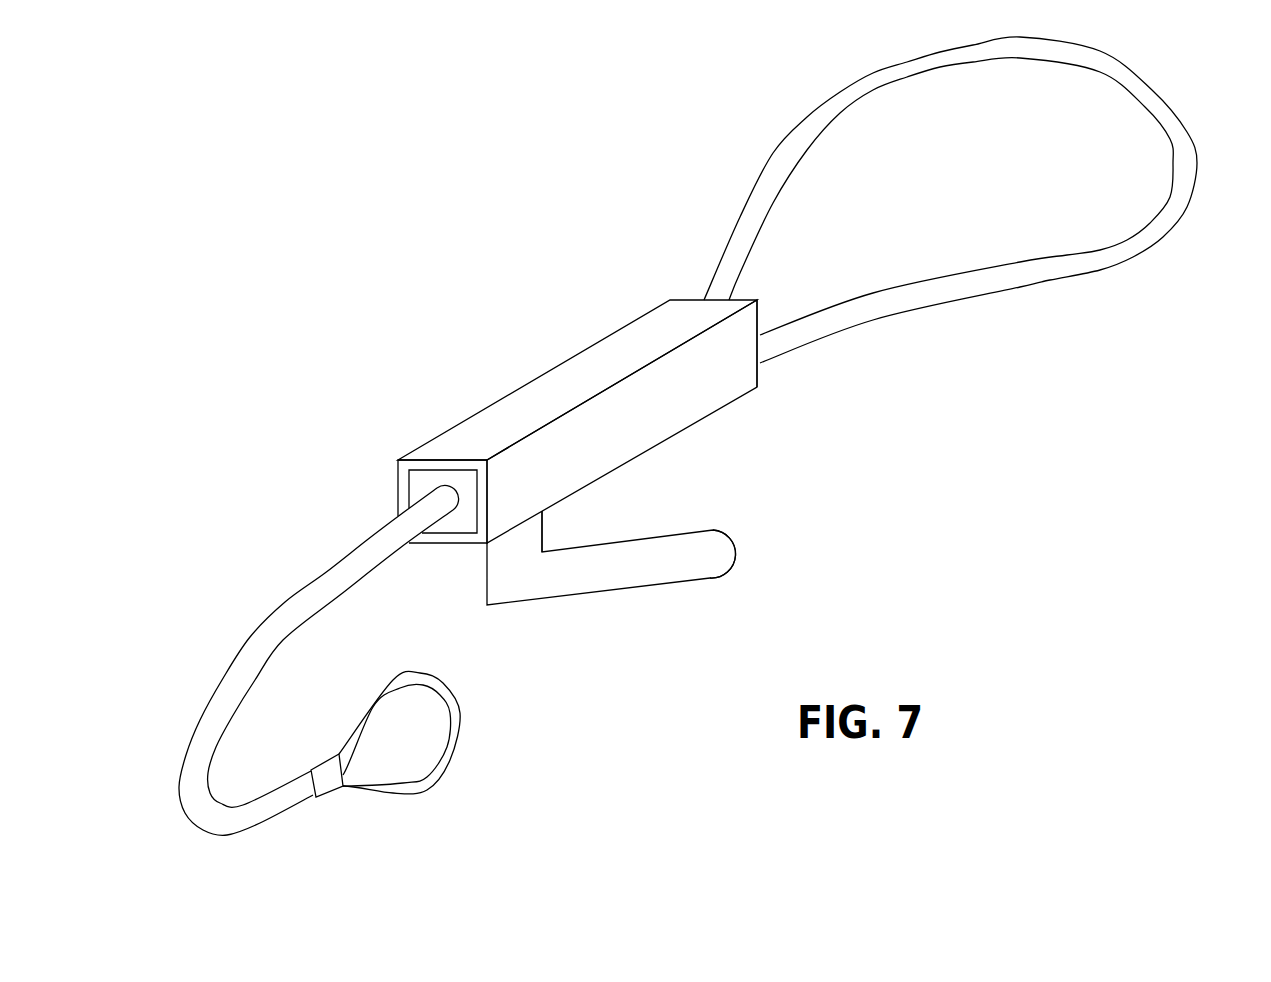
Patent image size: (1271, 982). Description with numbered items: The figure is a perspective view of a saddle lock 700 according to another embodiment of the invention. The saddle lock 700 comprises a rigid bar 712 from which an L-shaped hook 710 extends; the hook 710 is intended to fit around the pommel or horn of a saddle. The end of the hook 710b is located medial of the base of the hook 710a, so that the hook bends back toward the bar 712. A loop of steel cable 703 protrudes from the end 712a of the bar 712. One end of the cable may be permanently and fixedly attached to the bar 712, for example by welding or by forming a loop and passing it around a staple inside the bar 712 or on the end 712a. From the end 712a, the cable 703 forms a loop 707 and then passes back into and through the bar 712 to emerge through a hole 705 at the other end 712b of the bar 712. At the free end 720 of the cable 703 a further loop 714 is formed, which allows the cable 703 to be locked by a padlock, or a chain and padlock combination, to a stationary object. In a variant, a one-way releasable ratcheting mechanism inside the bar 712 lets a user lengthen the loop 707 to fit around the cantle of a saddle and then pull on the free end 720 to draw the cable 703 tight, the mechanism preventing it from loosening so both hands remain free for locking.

The saddle lock 700 is at (563, 224).
The steel cable 703 is at (285, 602).
The hole 705 is at (451, 493).
The loop 707 is at (1041, 127).
The L-shaped hook 710 is at (600, 567).
The base of the hook 710a is at (497, 548).
The end of the hook 710b is at (717, 553).
The rigid bar 712 is at (587, 367).
The end of the bar 712a is at (761, 318).
The other end of the bar 712b is at (402, 467).
The loop 714 is at (443, 683).
The free end of the cable 720 is at (440, 792).